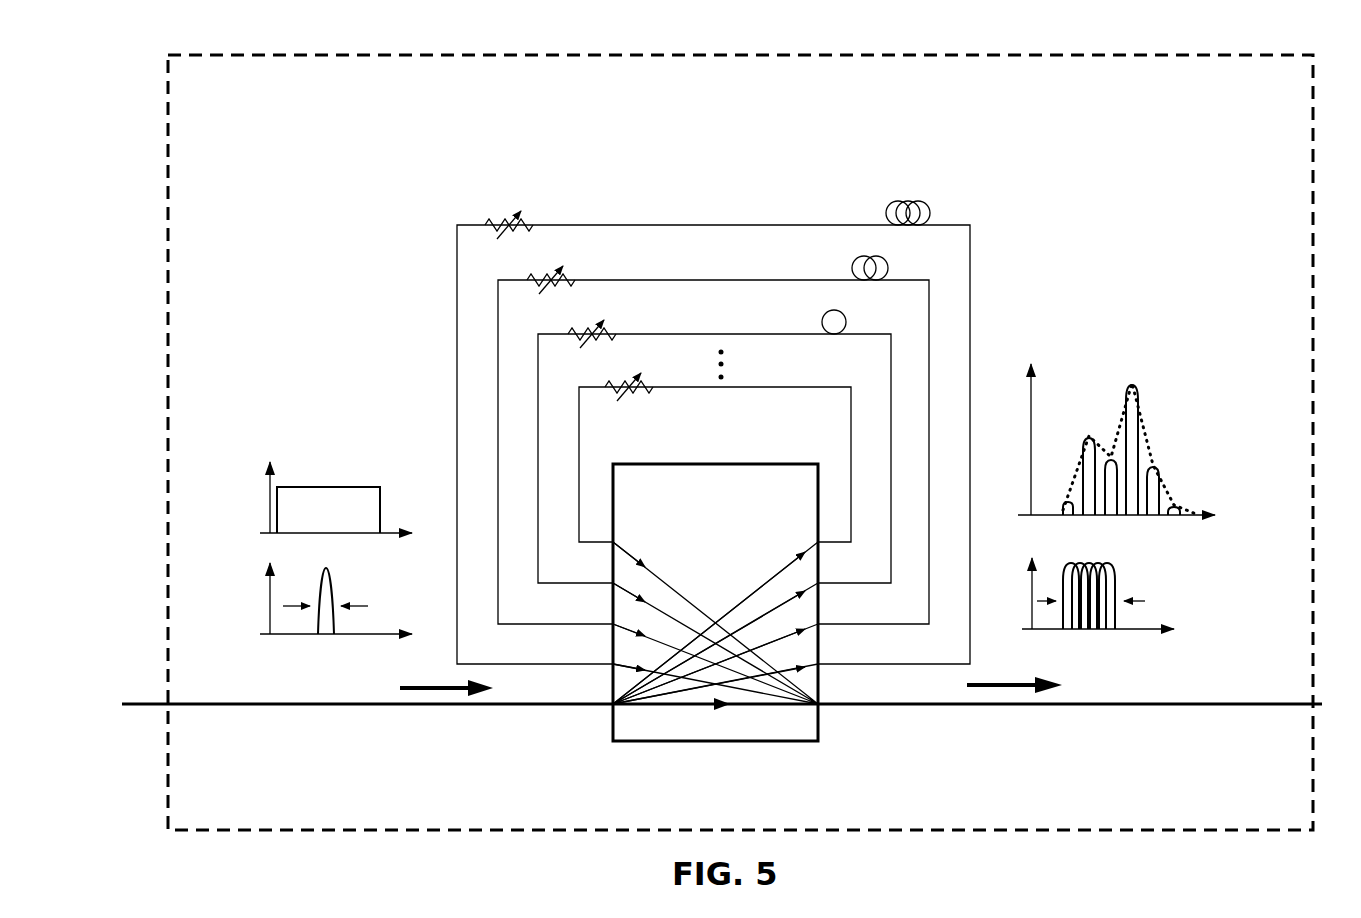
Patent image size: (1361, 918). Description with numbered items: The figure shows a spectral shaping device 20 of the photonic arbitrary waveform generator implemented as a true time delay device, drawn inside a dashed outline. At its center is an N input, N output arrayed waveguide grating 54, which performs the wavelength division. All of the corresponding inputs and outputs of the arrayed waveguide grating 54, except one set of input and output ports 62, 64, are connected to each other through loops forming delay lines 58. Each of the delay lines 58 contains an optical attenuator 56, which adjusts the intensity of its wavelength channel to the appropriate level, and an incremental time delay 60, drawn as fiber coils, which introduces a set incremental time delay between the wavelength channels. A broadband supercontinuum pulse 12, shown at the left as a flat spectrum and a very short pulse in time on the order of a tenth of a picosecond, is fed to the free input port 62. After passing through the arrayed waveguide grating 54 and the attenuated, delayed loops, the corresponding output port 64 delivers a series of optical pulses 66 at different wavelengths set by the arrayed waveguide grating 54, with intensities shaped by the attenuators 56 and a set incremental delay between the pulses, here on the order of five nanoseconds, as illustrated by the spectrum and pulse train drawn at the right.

The spectral shaping device 20 is at (165, 225).
The supercontinuum pulse 12 is at (348, 412).
The arrayed waveguide grating 54 is at (648, 742).
The optical attenuators 56 is at (536, 208).
The delay lines 58 is at (740, 225).
The incremental time delay 60 is at (934, 204).
The input port 62 is at (437, 707).
The output port 64 is at (952, 705).
The series of optical pulses 66 is at (1165, 336).